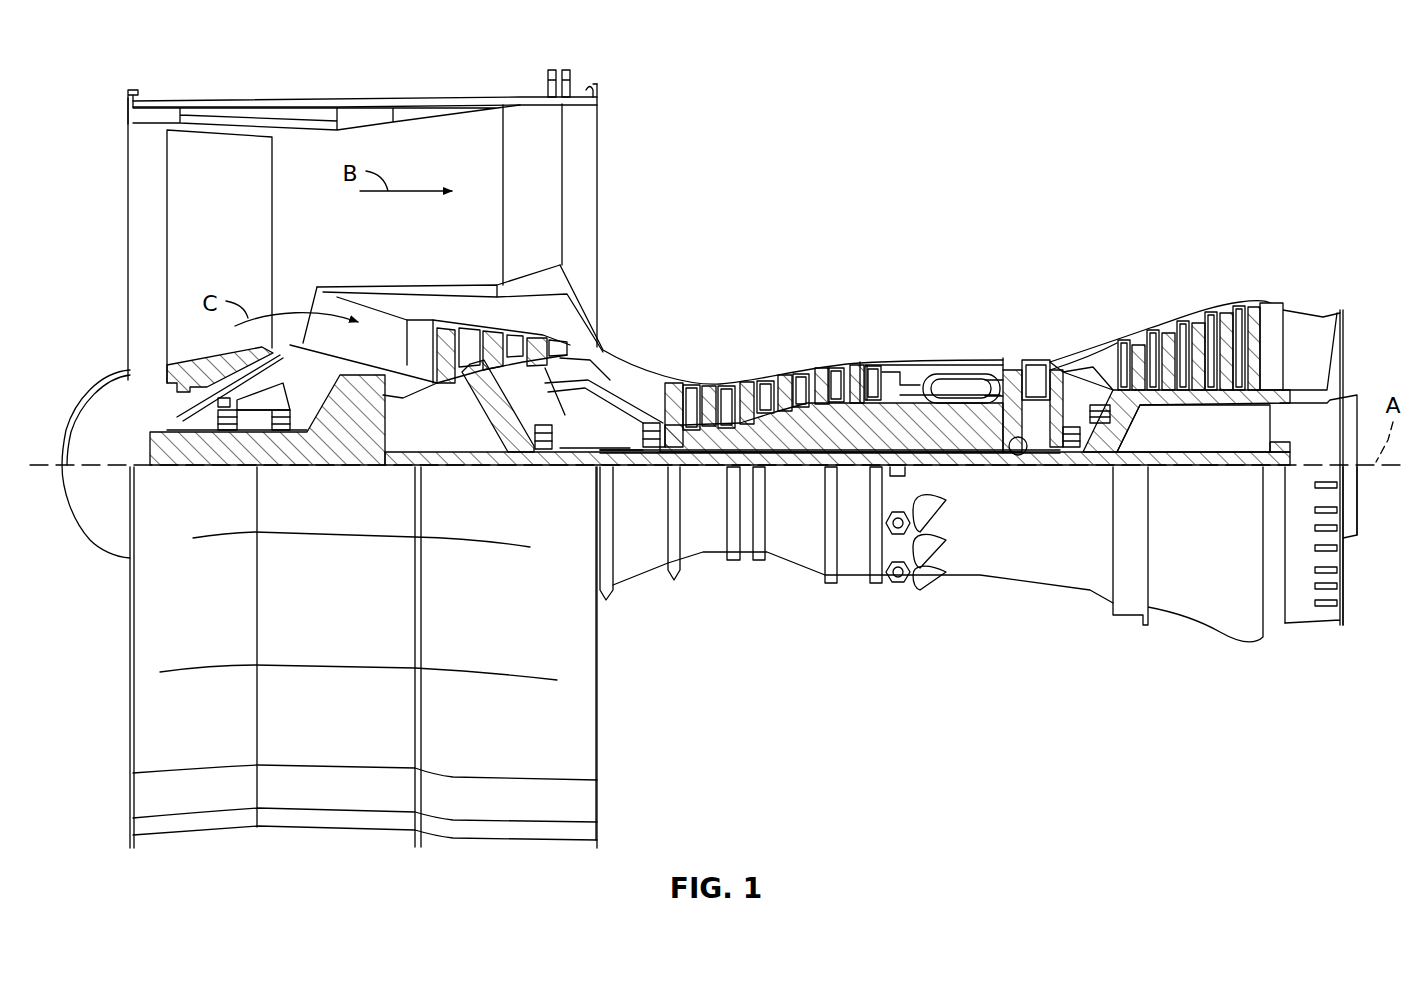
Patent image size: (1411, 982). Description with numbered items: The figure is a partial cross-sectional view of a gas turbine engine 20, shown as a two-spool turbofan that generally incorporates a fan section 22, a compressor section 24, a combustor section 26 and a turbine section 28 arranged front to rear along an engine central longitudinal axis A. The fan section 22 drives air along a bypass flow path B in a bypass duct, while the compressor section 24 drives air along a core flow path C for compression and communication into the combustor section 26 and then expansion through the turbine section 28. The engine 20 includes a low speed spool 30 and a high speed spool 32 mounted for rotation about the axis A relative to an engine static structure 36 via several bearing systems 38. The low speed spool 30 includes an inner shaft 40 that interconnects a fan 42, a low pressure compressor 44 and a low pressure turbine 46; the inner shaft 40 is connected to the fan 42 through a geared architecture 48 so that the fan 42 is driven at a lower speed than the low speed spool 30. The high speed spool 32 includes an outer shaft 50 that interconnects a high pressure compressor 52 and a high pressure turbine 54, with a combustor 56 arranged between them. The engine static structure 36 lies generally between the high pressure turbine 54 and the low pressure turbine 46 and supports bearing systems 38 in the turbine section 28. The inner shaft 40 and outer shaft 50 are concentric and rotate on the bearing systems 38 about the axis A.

The gas turbine engine 20 is at (1207, 147).
The fan section 22 is at (317, 88).
The compressor section 24 is at (766, 298).
The combustor section 26 is at (917, 315).
The turbine section 28 is at (1119, 298).
The low speed spool 30 is at (803, 474).
The high speed spool 32 is at (842, 420).
The engine static structure 36 is at (852, 583).
The bearing systems 38 is at (226, 432).
The inner shaft 40 is at (626, 457).
The fan 42 is at (219, 256).
The low pressure compressor 44 is at (514, 356).
The low pressure turbine 46 is at (1195, 325).
The geared architecture 48 is at (372, 440).
The outer shaft 50 is at (1022, 452).
The high pressure compressor 52 is at (764, 420).
The high pressure turbine 54 is at (1033, 368).
The combustor 56 is at (960, 385).